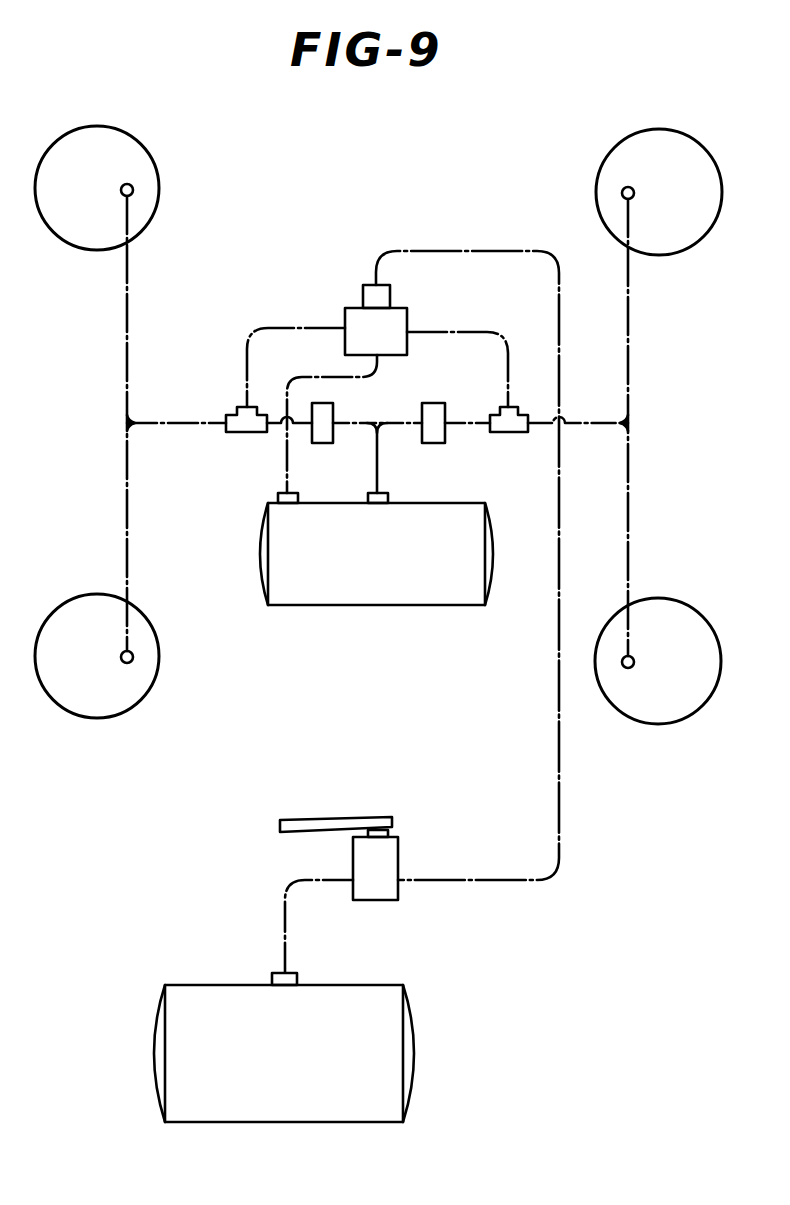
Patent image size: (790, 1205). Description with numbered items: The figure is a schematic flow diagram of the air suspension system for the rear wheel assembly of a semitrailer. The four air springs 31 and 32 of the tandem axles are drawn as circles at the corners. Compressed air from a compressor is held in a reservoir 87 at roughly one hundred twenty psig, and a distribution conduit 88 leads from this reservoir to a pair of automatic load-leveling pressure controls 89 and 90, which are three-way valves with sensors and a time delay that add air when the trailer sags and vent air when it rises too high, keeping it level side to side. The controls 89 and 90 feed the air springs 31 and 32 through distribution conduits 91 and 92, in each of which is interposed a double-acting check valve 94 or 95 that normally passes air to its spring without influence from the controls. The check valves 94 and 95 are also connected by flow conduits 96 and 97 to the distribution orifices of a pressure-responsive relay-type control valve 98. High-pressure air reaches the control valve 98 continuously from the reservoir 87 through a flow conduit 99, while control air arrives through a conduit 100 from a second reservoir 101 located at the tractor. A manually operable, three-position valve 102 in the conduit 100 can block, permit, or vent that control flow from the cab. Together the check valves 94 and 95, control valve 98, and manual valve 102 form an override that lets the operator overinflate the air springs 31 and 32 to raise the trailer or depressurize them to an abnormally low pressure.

The air spring 31 is at (80, 708).
The air spring 32 is at (91, 135).
The reservoir 87 is at (382, 595).
The distribution conduit 88 is at (380, 486).
The load-leveling pressure control 89 is at (432, 413).
The load-leveling pressure control 90 is at (327, 416).
The distribution conduit 91 is at (630, 383).
The distribution conduit 92 is at (125, 382).
The double-acting check valve 94 is at (508, 433).
The double-acting check valve 95 is at (248, 433).
The flow conduit 96 is at (505, 336).
The flow conduit 97 is at (268, 327).
The control valve 98 is at (362, 316).
The flow conduit 99 is at (285, 472).
The conduit 100 is at (490, 250).
The reservoir 101 is at (165, 988).
The manually operable valve 102 is at (385, 891).